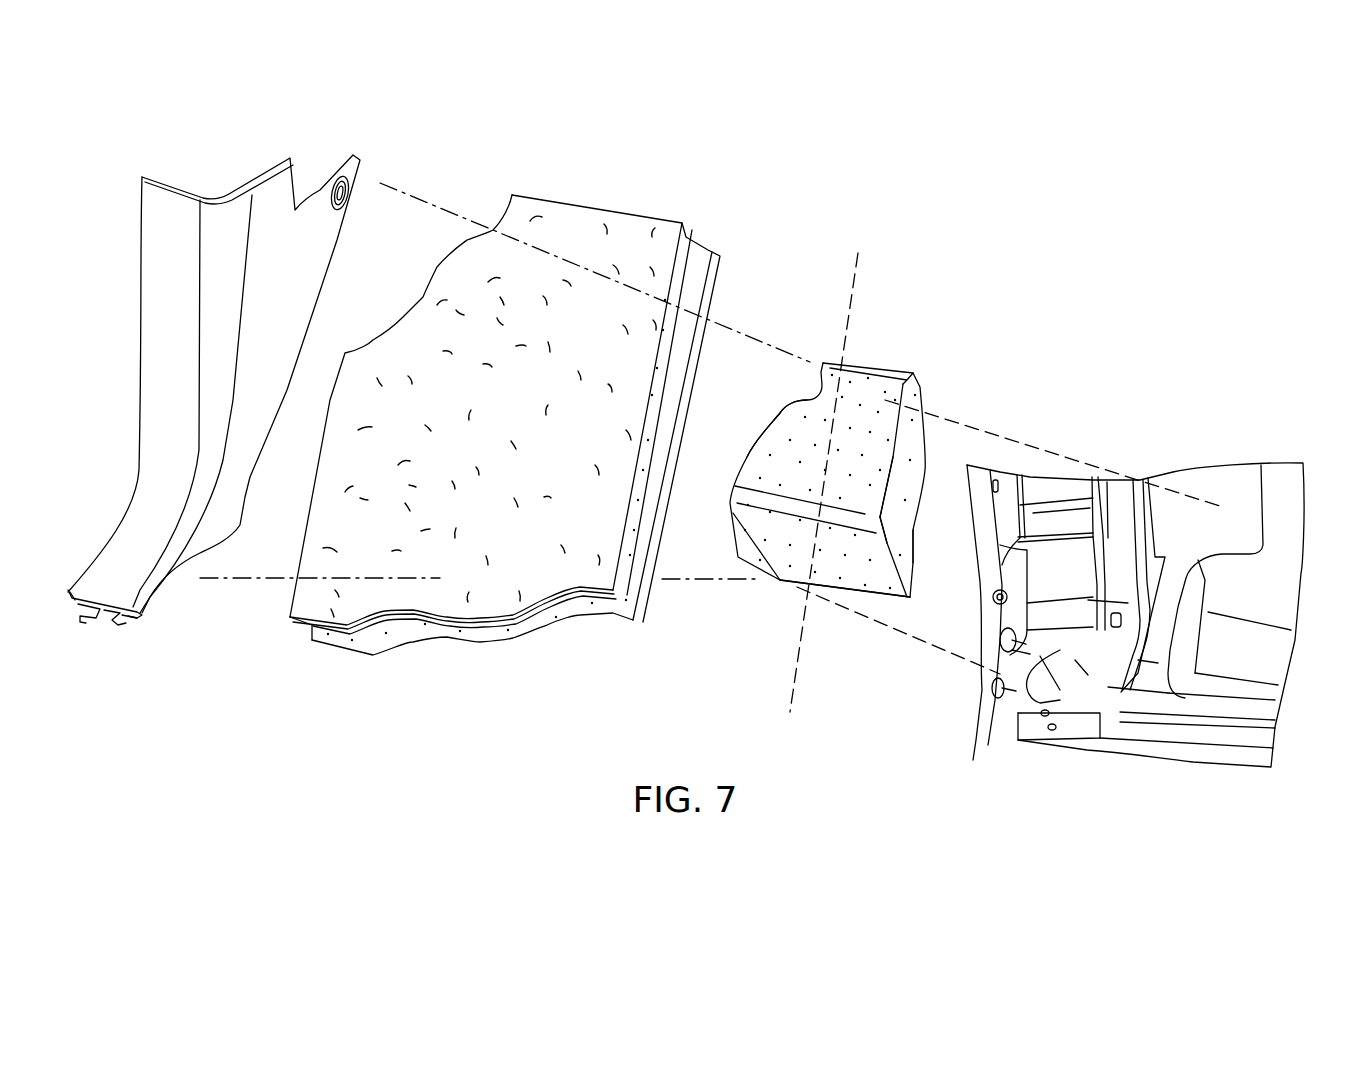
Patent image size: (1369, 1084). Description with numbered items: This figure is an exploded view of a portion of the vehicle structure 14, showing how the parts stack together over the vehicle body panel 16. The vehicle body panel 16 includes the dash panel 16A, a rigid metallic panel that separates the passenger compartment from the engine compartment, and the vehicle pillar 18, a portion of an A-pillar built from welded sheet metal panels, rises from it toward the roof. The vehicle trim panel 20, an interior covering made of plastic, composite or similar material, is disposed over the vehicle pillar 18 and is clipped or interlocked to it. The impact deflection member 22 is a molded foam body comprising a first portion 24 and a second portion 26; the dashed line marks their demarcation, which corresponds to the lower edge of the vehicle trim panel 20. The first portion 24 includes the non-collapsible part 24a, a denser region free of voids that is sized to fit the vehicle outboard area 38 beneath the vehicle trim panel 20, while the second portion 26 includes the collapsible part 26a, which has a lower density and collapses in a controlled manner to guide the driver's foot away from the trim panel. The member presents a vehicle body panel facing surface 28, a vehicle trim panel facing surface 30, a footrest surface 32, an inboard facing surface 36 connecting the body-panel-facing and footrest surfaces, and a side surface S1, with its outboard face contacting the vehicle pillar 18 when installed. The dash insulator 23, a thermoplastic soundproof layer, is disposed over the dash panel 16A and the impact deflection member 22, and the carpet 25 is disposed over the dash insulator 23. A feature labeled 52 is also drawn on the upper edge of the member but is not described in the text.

The vehicle structure 14 is at (1157, 485).
The vehicle body panel 16 is at (1157, 615).
The dash panel 16A is at (1270, 598).
The vehicle pillar 18 is at (1024, 493).
The vehicle trim panel 20 is at (277, 192).
The impact deflection member 22 is at (835, 466).
The dash insulator 23 is at (713, 281).
The first portion 24 is at (780, 460).
The non-collapsible part 24a is at (757, 477).
The carpet 25 is at (617, 210).
The second portion 26 is at (866, 458).
The collapsible part 26a is at (866, 496).
The vehicle body panel facing surface 28 is at (916, 512).
The vehicle trim panel facing surface 30 is at (785, 430).
The footrest surface 32 is at (868, 411).
The inboard facing surface 36 is at (910, 431).
The vehicle outboard area 38 is at (1073, 670).
The top strip 52 is at (870, 364).
The side surface S1 is at (865, 562).